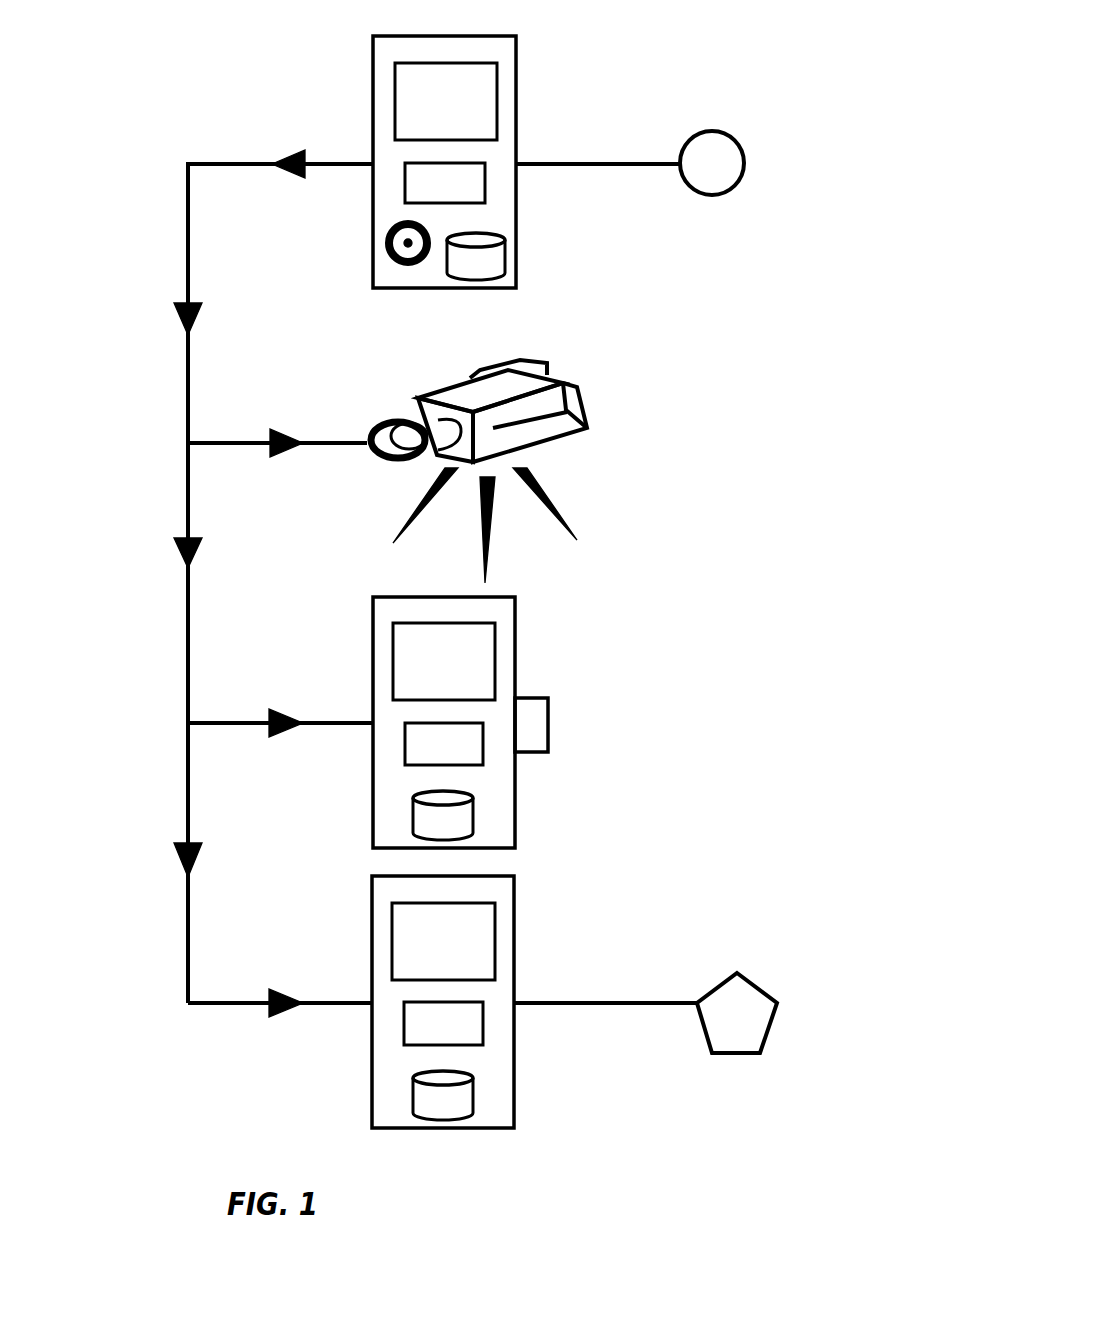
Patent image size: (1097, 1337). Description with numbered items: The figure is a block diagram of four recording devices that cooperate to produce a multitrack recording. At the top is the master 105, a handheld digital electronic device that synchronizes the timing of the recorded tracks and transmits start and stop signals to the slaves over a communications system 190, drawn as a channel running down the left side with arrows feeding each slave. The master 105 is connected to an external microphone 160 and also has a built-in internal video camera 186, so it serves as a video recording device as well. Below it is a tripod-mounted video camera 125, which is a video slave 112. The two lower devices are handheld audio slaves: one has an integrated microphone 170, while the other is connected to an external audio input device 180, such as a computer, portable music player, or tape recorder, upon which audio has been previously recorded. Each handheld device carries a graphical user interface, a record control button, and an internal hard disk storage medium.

The master 105 is at (433, 171).
The video slave 112 is at (473, 447).
The video camera 125 is at (473, 447).
The external microphone 160 is at (780, 117).
The integrated microphone 170 is at (687, 703).
The external audio input device 180 is at (800, 959).
The internal video camera 186 is at (319, 246).
The communications system 190 is at (386, 561).